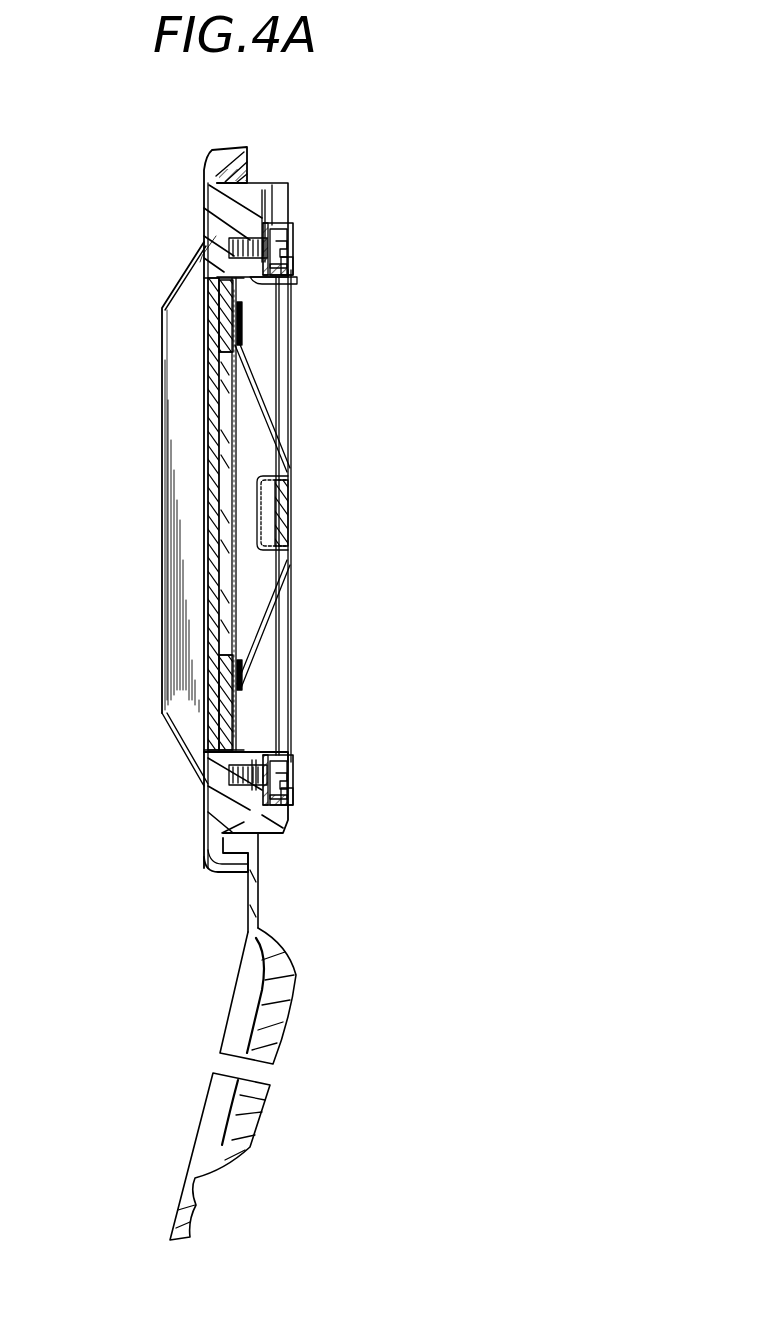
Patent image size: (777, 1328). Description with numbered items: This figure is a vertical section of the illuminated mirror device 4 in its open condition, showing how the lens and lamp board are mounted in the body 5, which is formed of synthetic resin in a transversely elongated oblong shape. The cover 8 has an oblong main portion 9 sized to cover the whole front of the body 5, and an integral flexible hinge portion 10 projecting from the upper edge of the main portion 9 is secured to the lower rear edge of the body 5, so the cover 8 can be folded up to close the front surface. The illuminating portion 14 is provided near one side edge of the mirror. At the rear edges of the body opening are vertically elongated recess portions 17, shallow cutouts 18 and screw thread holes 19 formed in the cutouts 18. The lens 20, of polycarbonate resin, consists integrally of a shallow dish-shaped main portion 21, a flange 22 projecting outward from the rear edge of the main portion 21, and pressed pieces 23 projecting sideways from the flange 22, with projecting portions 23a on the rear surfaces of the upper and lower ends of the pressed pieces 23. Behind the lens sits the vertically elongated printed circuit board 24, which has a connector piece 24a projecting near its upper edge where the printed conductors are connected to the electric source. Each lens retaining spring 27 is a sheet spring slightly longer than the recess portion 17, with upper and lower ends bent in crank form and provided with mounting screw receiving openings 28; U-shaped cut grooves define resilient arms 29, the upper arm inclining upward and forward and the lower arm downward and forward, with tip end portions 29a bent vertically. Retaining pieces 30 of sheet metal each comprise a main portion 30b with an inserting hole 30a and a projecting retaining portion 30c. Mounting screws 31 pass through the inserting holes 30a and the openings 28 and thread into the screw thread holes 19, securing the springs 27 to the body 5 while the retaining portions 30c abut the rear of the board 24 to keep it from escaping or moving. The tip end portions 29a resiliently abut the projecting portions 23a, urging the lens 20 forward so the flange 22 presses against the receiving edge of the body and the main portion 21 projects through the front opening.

The power supply unit assembly 4 is at (141, 257).
The body 5 is at (205, 172).
The cover 8 is at (268, 1118).
The main portion 9 is at (280, 1040).
The flexible hinge portion 10 is at (250, 896).
The illuminating portion 14 is at (163, 481).
The recess portion 17 is at (250, 278).
The cutout 18 is at (292, 225).
The screw thread hole 19 is at (233, 246).
The lens 20 is at (162, 562).
The main portion 21 is at (170, 538).
The flange 22 is at (224, 408).
The pressed piece 23 is at (226, 422).
The projecting portion 23a is at (236, 355).
The printed circuit board 24 is at (287, 492).
The connector piece 24a is at (283, 518).
The lens retaining spring 27 is at (293, 320).
The mounting screw receiving opening 28 is at (252, 244).
The resilient arm 29 is at (263, 394).
The tip end portion 29a is at (241, 322).
The retaining piece 30 is at (292, 240).
The inserting hole 30a is at (271, 244).
The main portion 30b is at (297, 268).
The retaining portion 30c is at (296, 260).
The mounting screw 31 is at (294, 252).